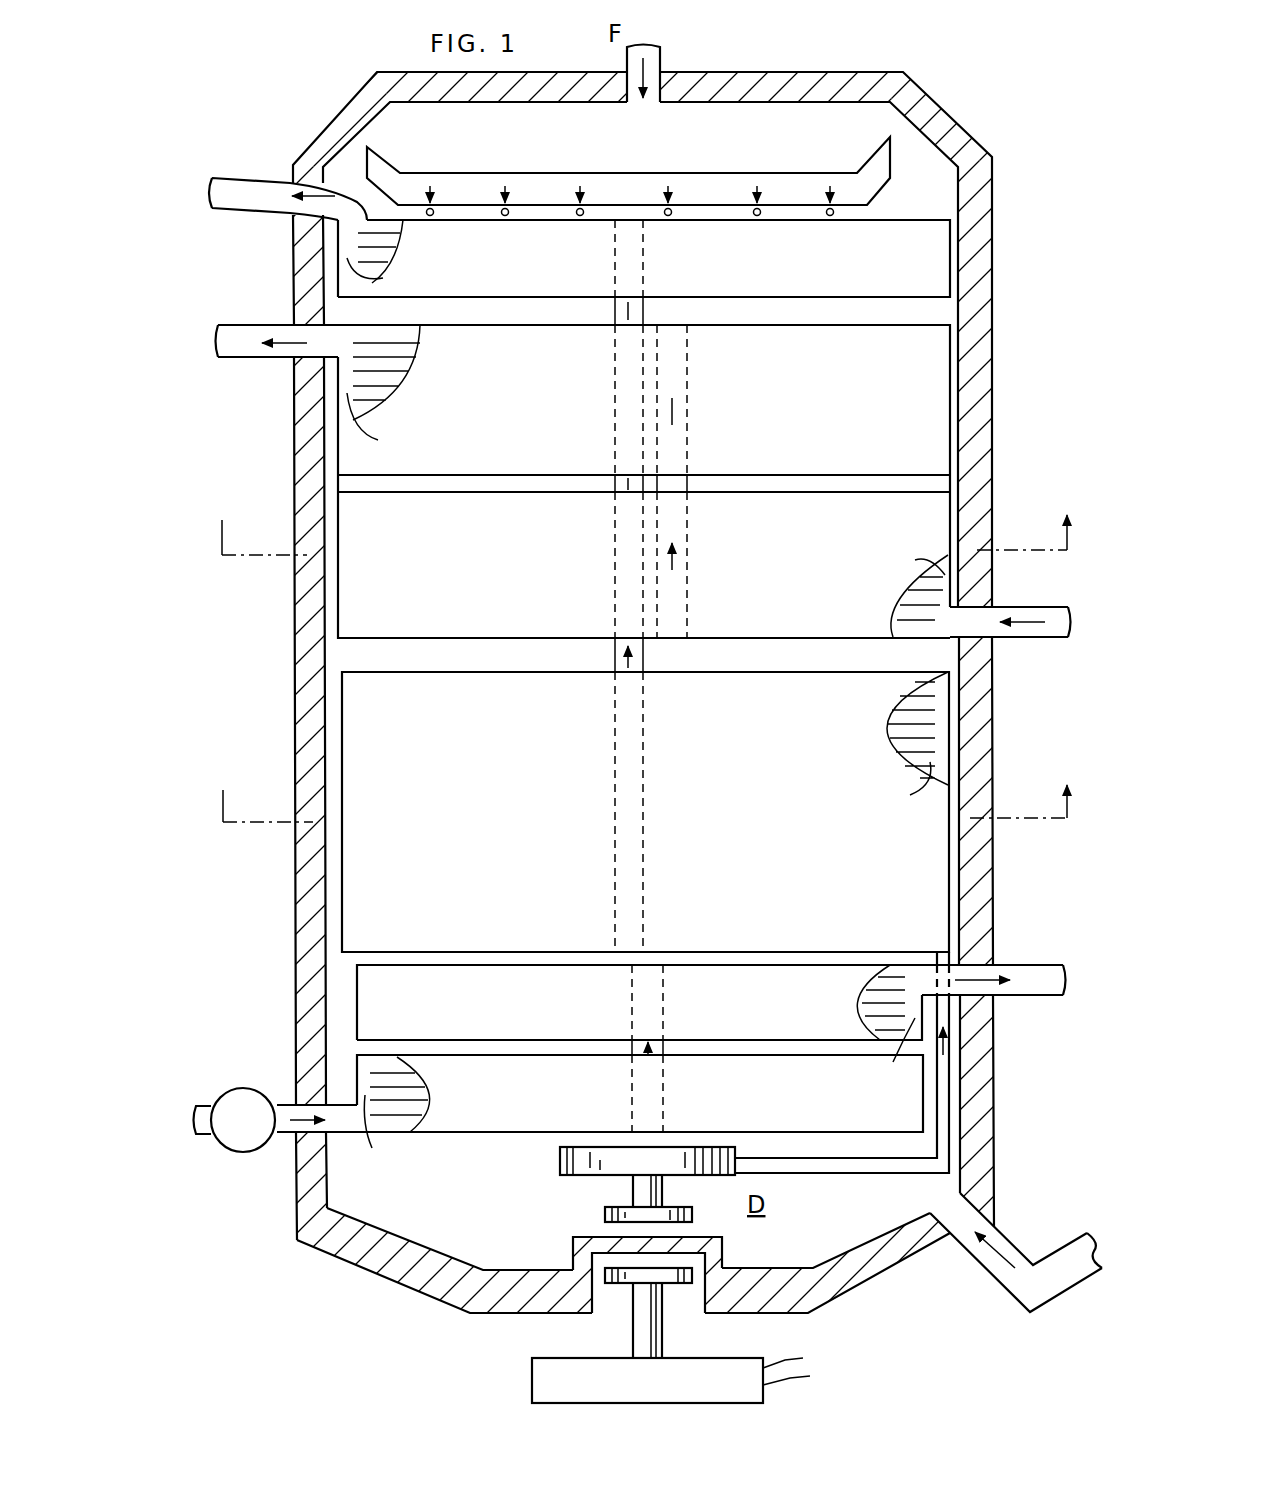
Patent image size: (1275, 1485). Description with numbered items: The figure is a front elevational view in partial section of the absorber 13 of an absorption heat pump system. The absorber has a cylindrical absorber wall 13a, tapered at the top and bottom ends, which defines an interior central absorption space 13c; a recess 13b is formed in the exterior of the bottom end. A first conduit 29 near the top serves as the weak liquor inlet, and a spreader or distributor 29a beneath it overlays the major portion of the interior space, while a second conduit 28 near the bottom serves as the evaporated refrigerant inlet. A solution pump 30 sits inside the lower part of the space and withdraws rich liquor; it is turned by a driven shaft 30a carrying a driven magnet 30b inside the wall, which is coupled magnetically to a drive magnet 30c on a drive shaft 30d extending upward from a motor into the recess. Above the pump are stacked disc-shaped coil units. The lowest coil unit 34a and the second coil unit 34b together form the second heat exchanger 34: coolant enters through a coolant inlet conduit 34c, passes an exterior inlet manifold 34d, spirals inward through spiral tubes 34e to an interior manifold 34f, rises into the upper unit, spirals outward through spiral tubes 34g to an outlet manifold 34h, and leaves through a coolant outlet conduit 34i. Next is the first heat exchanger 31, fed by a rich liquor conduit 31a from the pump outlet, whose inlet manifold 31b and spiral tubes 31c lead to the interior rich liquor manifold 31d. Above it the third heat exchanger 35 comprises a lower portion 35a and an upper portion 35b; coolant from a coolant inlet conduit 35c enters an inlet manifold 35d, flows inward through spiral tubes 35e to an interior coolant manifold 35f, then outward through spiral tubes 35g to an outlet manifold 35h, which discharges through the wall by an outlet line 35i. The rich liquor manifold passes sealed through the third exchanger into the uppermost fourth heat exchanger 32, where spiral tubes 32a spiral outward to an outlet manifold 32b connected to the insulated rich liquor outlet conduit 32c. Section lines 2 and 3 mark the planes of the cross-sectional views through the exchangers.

The absorber 13 is at (643, 715).
The absorber wall 13a is at (372, 1255).
The recess 13b is at (606, 1293).
The central absorption space 13c is at (404, 1179).
The second conduit 28 is at (957, 1223).
The first conduit 29 is at (660, 68).
The spreader or distributor 29a is at (780, 177).
The solution pump 30 is at (656, 1275).
The driven shaft 30a is at (643, 1187).
The driven magnet 30b is at (607, 1213).
The drive magnet 30c is at (670, 1270).
The drive shaft 30d is at (662, 1347).
The first heat exchanger 31 is at (652, 696).
The rich liquor conduit 31a is at (945, 1108).
The inlet manifold 31b is at (945, 767).
The spiral tubes 31c is at (898, 702).
The interior rich liquor manifold 31d is at (643, 253).
The fourth heat exchanger 32 is at (579, 211).
The spiral tubes 32a is at (387, 242).
The outlet manifold 32b is at (380, 277).
The rich liquor outlet conduit 32c is at (292, 183).
The second heat exchanger 34 is at (630, 1080).
The first coil unit 34a is at (355, 1066).
The second coil unit 34b is at (355, 973).
The coolant inlet conduit 34c is at (290, 1137).
The inlet manifold 34d is at (388, 1135).
The spiral tubes 34e is at (412, 1078).
The interior manifold 34f is at (663, 1007).
The spiral tubes 34g is at (877, 997).
The outlet manifold 34h is at (896, 1052).
The coolant outlet conduit 34i is at (993, 990).
The third heat exchanger 35 is at (643, 463).
The lower portion of third exchanger 35a is at (338, 593).
The upper portion of third exchanger 35b is at (337, 463).
The coolant inlet conduit 35c is at (998, 605).
The inlet manifold 35d is at (938, 582).
The spiral tubes 35e is at (917, 597).
The interior coolant manifold 35f is at (687, 390).
The spiral tubes 35g is at (408, 347).
The outlet manifold 35h is at (385, 424).
The outlet pipe 35i is at (287, 318).
The section line 2- 2 is at (644, 788).
The section line 3- 3 is at (644, 518).